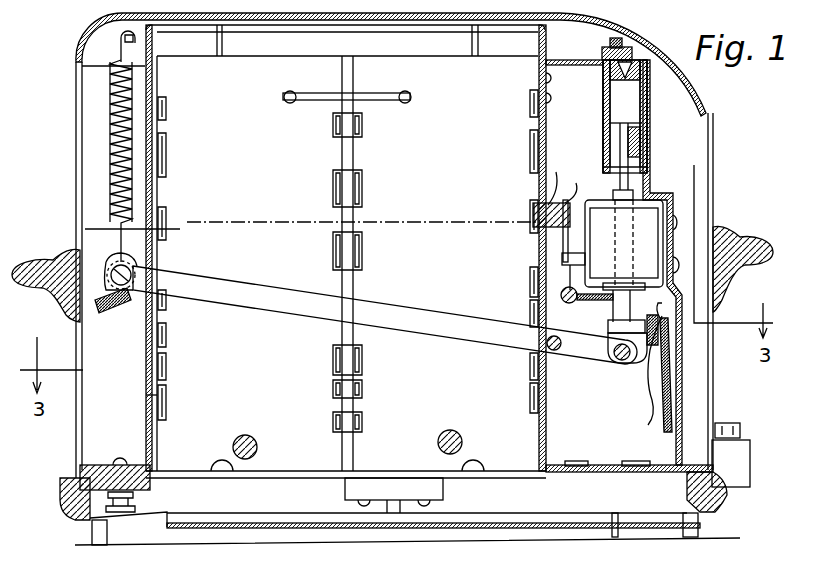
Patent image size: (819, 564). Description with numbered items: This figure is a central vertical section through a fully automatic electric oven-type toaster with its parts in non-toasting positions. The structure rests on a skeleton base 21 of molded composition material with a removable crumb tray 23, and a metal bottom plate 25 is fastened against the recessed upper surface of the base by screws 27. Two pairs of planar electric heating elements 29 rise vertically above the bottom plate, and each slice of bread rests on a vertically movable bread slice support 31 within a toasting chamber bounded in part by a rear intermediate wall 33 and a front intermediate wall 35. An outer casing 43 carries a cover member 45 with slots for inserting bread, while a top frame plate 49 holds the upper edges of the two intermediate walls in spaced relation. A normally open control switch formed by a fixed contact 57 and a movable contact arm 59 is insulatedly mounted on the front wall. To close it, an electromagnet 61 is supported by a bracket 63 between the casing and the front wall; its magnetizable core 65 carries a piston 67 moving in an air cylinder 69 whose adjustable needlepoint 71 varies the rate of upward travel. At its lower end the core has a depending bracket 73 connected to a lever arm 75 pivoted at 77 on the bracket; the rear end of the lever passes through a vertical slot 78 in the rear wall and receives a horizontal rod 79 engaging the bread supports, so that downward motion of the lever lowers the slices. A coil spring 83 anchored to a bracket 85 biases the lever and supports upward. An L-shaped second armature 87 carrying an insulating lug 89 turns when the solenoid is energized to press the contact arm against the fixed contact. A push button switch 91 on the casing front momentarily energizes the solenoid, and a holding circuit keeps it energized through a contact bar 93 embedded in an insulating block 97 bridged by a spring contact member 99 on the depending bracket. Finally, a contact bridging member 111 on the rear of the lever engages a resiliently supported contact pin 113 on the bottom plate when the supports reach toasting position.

The base 21 is at (720, 498).
The crumb tray 23 is at (298, 528).
The bottom plate 25 is at (608, 475).
The screws 27 is at (420, 503).
The electric heating elements 29 is at (176, 352).
The bread slice support 31 is at (168, 157).
The rear intermediate wall 33 is at (153, 85).
The front intermediate wall 35 is at (548, 125).
The outer casing 43 is at (714, 153).
The cover member 45 is at (657, 42).
The top frame plate 49 is at (424, 16).
The fixed contact 57 is at (552, 200).
The movable contact arm 59 is at (566, 202).
The electromagnet 61 is at (624, 238).
The bracket 63 is at (650, 175).
The magnetizable core 65 is at (650, 305).
The piston 67 is at (641, 129).
The air cylinder 69 is at (603, 101).
The adjustable needlepoint 71 is at (612, 40).
The depending bracket 73 is at (615, 333).
The lever arm 75 is at (488, 342).
The pivot 77 is at (557, 352).
The vertical slot 78 is at (150, 396).
The horizontal rod 79 is at (118, 265).
The coil spring 83 is at (109, 161).
The bracket 85 is at (120, 46).
The second armature 87 is at (597, 298).
The lug 89 is at (568, 250).
The push button switch 91 is at (733, 425).
The contact bar 93 is at (684, 345).
The block 97 is at (664, 428).
The spring contact member 99 is at (652, 382).
The contact bridging member 111 is at (112, 315).
The contact pin 113 is at (118, 453).